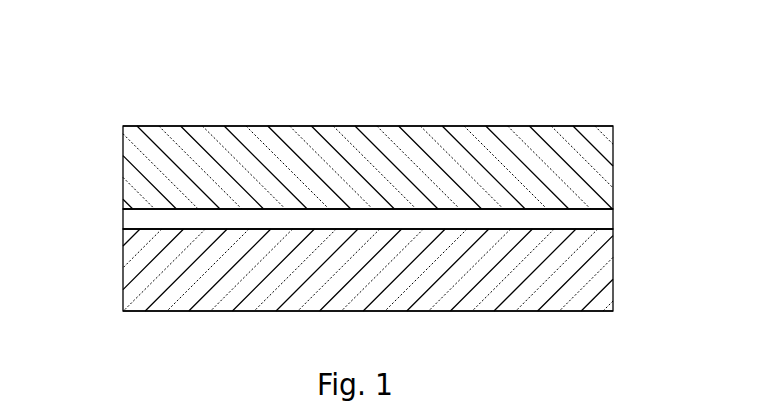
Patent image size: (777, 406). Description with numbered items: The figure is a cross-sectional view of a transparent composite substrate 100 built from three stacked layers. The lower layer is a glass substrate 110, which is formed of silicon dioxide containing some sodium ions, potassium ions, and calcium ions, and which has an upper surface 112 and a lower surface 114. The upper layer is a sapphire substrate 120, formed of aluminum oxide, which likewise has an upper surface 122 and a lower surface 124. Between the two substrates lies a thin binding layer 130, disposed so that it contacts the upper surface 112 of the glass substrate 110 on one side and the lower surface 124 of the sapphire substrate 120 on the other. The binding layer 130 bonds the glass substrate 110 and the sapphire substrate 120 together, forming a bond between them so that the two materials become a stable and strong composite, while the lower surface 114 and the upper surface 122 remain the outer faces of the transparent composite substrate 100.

The transparent composite substrate 100 is at (91, 46).
The glass substrate 110 is at (613, 273).
The upper surface 112 is at (123, 240).
The lower surface 114 is at (132, 312).
The sapphire substrate 120 is at (613, 165).
The upper surface 122 is at (450, 127).
The lower surface 124 is at (123, 218).
The binding layer 130 is at (613, 220).